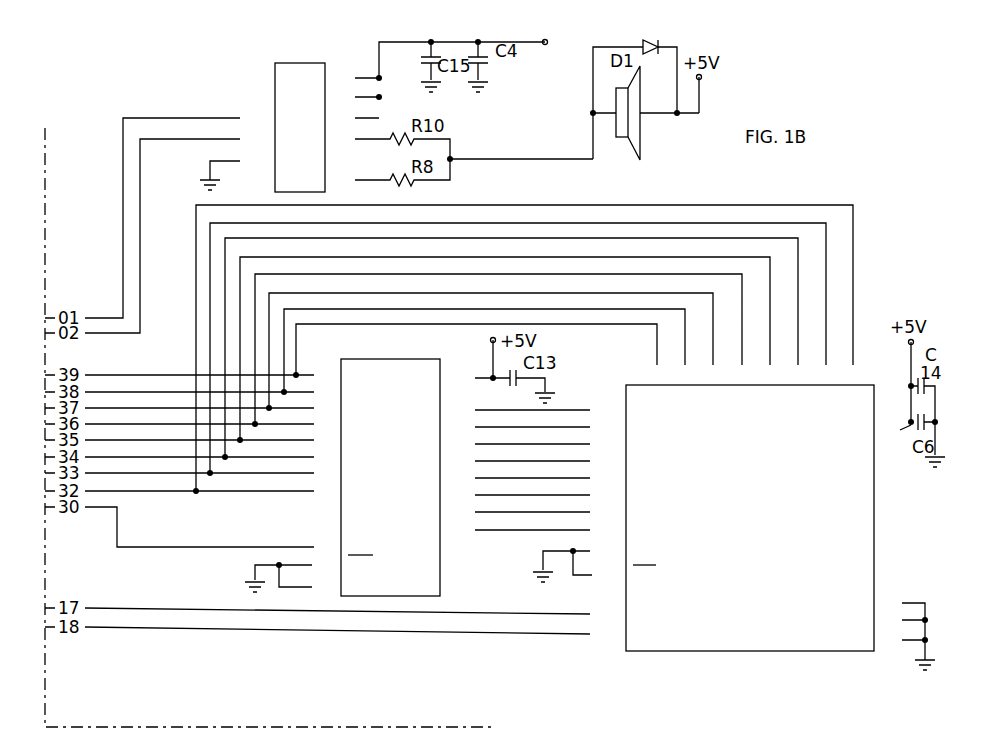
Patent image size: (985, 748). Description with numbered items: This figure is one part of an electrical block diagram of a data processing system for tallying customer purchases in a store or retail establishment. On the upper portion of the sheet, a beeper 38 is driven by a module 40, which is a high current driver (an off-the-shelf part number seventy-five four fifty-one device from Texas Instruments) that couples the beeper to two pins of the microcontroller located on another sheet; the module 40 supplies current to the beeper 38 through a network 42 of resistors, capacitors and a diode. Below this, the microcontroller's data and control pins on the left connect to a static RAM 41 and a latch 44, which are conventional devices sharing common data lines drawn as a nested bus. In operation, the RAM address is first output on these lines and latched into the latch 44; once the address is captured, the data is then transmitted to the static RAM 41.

The beeper 38 is at (640, 149).
The module 40 is at (286, 87).
The static RAM 41 is at (874, 512).
The network 42 is at (546, 86).
The latch 44 is at (440, 566).